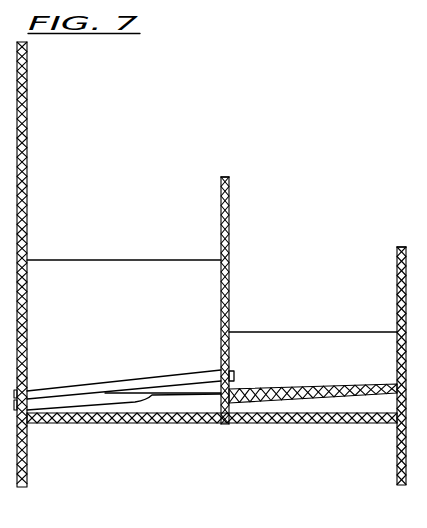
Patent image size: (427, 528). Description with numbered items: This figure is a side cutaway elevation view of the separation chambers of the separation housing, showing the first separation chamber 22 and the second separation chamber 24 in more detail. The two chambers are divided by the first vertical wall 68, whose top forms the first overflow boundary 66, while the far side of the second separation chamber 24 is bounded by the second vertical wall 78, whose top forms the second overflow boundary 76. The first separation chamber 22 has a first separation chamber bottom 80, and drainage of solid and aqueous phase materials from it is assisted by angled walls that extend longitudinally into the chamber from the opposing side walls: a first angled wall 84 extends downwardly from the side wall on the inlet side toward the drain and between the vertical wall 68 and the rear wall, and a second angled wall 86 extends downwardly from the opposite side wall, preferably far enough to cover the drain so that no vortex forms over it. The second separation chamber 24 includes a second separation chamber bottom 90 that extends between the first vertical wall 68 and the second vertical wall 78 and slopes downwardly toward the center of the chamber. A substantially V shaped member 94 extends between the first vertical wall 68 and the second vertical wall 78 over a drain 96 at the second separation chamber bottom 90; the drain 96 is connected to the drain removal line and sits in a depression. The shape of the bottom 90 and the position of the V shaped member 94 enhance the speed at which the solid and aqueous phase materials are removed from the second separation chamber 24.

The first separation chamber 22 is at (117, 189).
The second separation chamber 24 is at (314, 218).
The first overflow boundary 66 is at (225, 176).
The first vertical wall 68 is at (221, 197).
The second overflow boundary 76 is at (400, 246).
The second vertical wall 78 is at (397, 262).
The first separation chamber bottom 80 is at (173, 394).
The first angled wall 84 is at (139, 347).
The second angled wall 86 is at (139, 291).
The second separation chamber bottom 90 is at (330, 377).
The substantially V shaped member 94 is at (287, 331).
The drain 96 is at (262, 384).